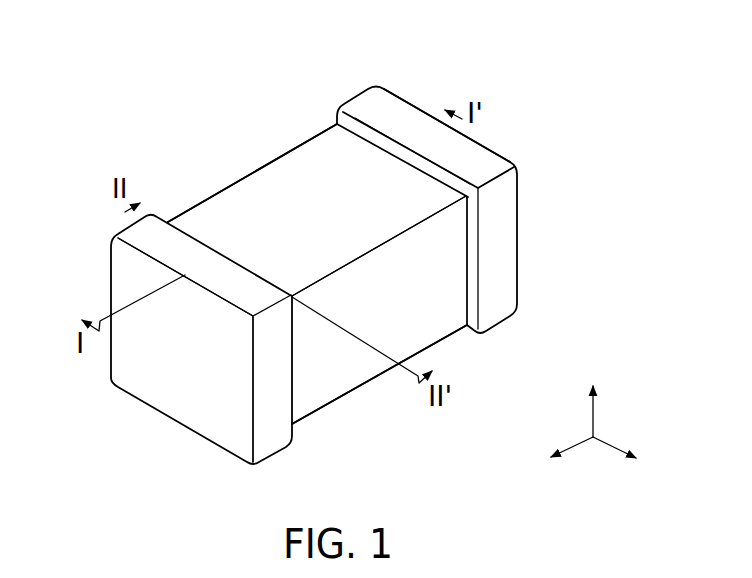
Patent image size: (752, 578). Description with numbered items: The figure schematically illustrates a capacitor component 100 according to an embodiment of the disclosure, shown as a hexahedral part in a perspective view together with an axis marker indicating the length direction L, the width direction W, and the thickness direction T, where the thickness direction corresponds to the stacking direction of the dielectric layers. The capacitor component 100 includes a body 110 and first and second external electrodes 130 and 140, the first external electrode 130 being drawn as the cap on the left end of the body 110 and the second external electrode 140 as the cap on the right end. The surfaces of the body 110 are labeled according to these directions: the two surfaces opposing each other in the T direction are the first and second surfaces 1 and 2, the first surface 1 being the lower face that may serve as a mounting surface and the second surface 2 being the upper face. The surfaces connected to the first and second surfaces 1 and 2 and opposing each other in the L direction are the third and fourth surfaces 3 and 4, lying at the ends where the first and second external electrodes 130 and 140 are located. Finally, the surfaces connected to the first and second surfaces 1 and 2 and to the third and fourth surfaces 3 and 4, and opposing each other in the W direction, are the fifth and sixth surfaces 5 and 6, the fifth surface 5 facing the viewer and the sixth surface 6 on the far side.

The capacitor component 100 is at (150, 41).
The body 110 is at (268, 178).
The first external electrode 130 is at (129, 241).
The second external electrode 140 is at (362, 104).
The first surface 1 is at (343, 406).
The second surface 2 is at (321, 173).
The third surface 3 is at (162, 385).
The fourth surface 4 is at (412, 97).
The fifth surface 5 is at (424, 320).
The sixth surface 6 is at (198, 194).